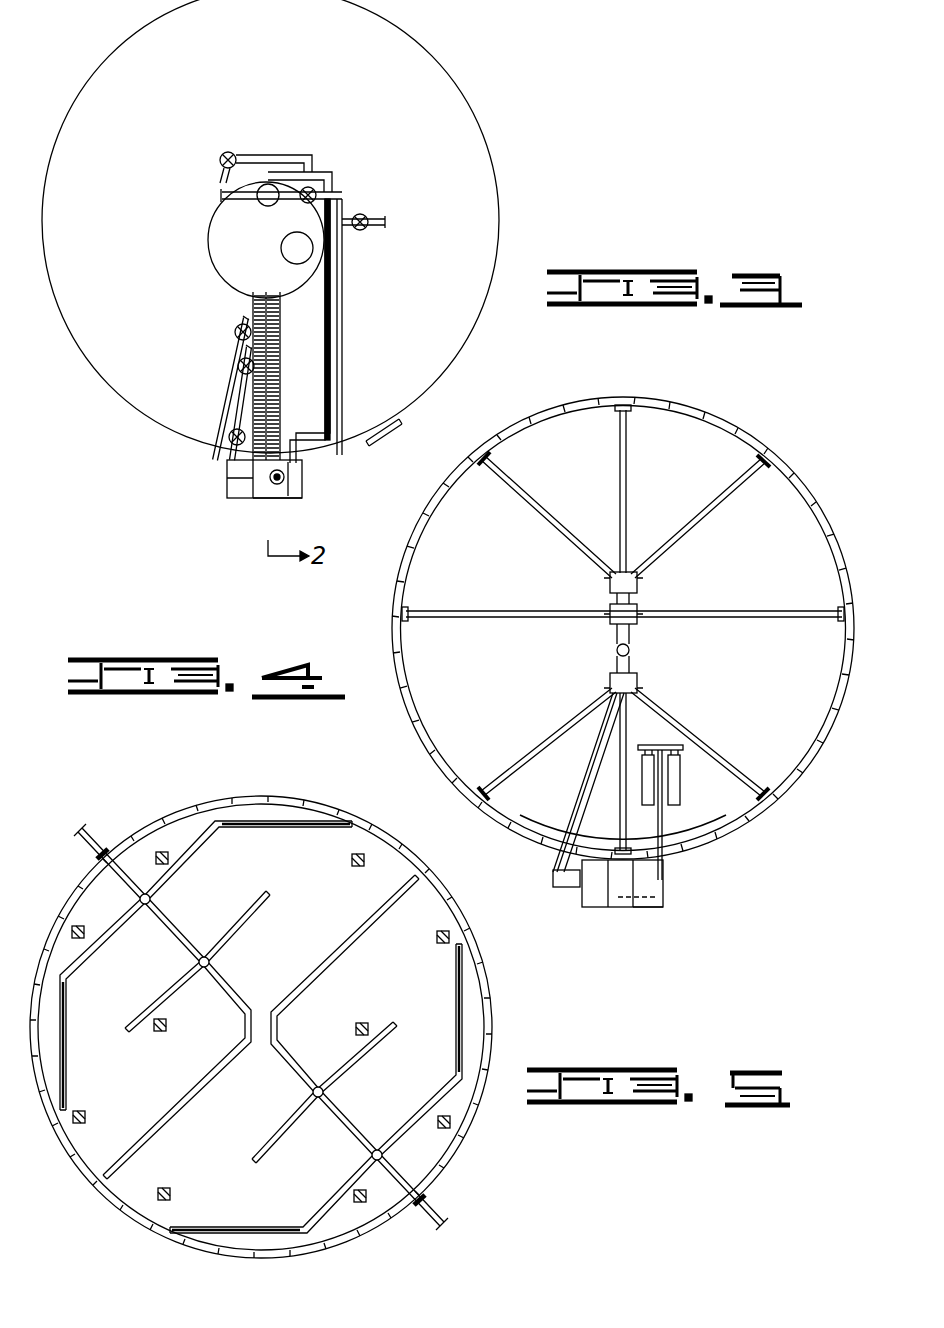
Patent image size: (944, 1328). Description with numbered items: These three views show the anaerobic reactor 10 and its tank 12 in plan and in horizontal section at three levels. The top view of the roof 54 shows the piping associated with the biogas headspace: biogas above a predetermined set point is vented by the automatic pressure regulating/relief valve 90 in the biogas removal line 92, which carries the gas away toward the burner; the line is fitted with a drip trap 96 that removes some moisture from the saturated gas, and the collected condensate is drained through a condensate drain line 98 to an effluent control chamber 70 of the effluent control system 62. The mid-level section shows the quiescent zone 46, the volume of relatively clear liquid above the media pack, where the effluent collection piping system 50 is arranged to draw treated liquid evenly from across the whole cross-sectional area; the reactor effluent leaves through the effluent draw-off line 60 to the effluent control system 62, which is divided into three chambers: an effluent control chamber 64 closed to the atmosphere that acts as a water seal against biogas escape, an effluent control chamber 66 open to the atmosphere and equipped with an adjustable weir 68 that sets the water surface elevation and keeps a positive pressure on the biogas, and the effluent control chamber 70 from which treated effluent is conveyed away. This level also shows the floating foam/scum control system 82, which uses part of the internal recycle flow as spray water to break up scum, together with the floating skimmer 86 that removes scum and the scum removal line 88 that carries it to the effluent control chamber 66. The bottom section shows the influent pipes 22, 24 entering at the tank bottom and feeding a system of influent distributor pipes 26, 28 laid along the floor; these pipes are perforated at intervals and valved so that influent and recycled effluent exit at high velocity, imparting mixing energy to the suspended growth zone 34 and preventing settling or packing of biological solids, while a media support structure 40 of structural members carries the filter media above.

In FIG. 3, the anaerobic reactor 10 is at (480, 82).
In FIG. 4, the anaerobic reactor 10 is at (810, 478).
In FIG. 5, the anaerobic reactor 10 is at (503, 1023).
In FIG. 3, the tank 12 is at (498, 182).
In FIG. 4, the tank 12 is at (835, 543).
In FIG. 5, the tank 12 is at (492, 1003).
In FIG. 5, the influent pipe 22 is at (92, 833).
In FIG. 5, the influent pipe 24 is at (442, 1208).
In FIG. 5, the influent distributor pipe 26 is at (190, 955).
In FIG. 5, the influent distributor pipe 28 is at (110, 940).
In FIG. 5, the suspended growth zone 34 is at (281, 967).
In FIG. 5, the media support structure 40 is at (352, 868).
In FIG. 4, the quiescent zone 46 is at (562, 676).
In FIG. 4, the effluent collection piping system 50 is at (543, 529).
In FIG. 3, the roof 54 is at (427, 261).
In FIG. 4, the effluent draw-off line 60 is at (586, 777).
In FIG. 3, the effluent control system 62 is at (214, 484).
In FIG. 4, the effluent control system 62 is at (673, 907).
In FIG. 3, the effluent control chamber 64 is at (237, 488).
In FIG. 4, the effluent control chamber 64 is at (594, 898).
In FIG. 3, the effluent control chamber 66 is at (262, 489).
In FIG. 4, the effluent control chamber 66 is at (617, 902).
In FIG. 3, the adjustable weir 68 is at (279, 485).
In FIG. 3, the effluent control chamber 70 is at (298, 487).
In FIG. 4, the effluent control chamber 70 is at (640, 904).
In FIG. 4, the floating foam/scum control system 82 is at (703, 855).
In FIG. 4, the floating skimmer 86 is at (678, 780).
In FIG. 4, the scum removal line 88 is at (661, 886).
In FIG. 3, the automatic pressure regulating/relief valve 90 is at (312, 187).
In FIG. 3, the biogas removal line 92 is at (233, 202).
In FIG. 3, the drip trap 96 is at (268, 184).
In FIG. 3, the condensate drain line 98 is at (324, 328).